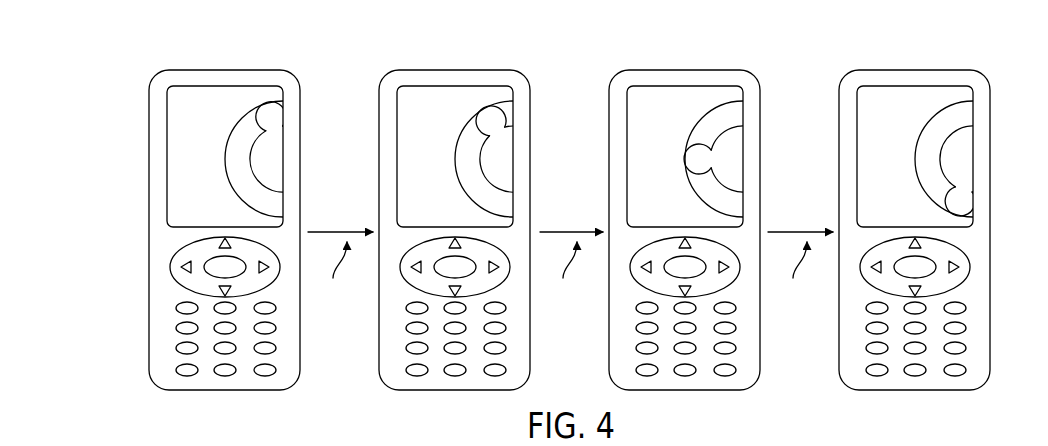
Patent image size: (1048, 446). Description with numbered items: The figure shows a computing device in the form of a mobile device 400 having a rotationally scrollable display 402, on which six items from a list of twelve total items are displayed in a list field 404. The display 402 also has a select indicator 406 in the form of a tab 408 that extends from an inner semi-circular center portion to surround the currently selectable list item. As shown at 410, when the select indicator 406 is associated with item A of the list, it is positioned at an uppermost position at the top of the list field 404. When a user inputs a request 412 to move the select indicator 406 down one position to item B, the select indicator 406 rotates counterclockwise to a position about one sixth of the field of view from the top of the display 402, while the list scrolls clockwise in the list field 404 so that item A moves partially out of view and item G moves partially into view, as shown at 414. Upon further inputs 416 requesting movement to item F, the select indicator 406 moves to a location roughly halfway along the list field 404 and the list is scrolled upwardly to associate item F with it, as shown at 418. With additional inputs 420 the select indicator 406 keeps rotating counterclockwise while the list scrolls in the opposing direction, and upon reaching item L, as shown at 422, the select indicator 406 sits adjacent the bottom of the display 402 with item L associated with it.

The mobile device 400 is at (154, 82).
The rotationally scrollable display 402 is at (180, 207).
The list field 404 is at (277, 203).
The select indicator 406 is at (273, 155).
The tab 408 is at (273, 100).
The state with select indicator at item A 410 is at (128, 129).
The request 412 is at (345, 210).
The state with select indicator at item B 414 is at (365, 127).
The further inputs 416 is at (578, 210).
The state with select indicator at item F 418 is at (598, 127).
The additional inputs 420 is at (808, 210).
The state with select indicator at item L 422 is at (830, 127).